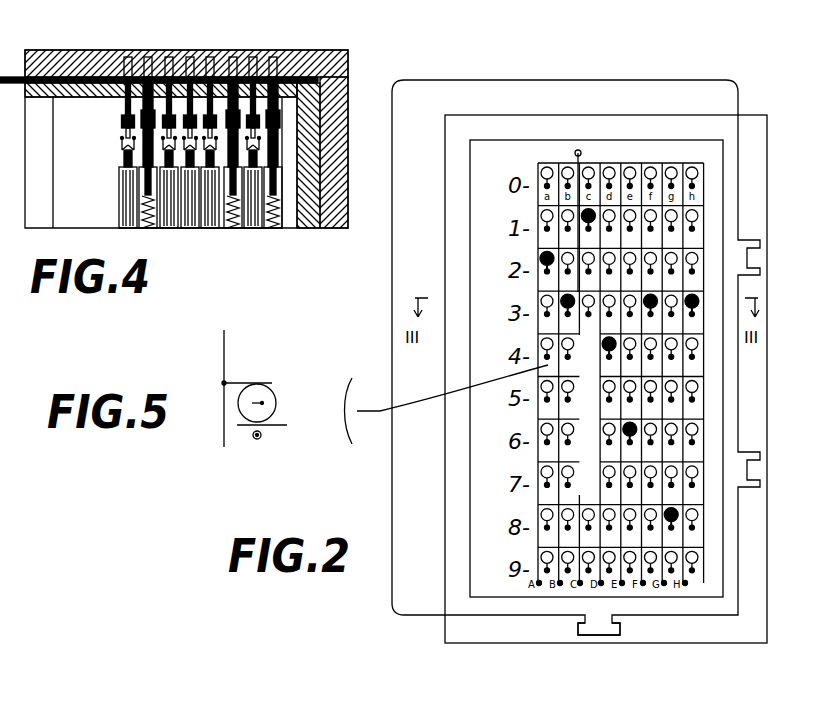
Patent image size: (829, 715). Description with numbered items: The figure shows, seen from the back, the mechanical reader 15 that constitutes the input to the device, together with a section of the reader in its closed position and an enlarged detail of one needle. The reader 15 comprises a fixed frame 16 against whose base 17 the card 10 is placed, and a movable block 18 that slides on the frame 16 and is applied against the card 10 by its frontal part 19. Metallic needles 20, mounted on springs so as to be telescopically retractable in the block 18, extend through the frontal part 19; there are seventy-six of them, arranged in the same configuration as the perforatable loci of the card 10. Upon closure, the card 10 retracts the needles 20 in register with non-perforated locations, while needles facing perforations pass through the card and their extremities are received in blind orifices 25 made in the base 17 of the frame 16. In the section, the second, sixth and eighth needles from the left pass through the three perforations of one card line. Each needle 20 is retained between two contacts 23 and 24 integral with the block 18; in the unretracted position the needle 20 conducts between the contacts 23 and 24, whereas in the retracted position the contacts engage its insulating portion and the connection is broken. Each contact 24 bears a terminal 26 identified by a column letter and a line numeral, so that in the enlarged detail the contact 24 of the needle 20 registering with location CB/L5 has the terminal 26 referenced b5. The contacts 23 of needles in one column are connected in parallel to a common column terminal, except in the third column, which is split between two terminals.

In FIG. 4, the card 10 is at (14, 73).
In FIG. 2, the card 10 is at (490, 83).
In FIG. 4, the reader 15 is at (358, 51).
In FIG. 2, the reader 15 is at (432, 471).
In FIG. 4, the fixed frame 16 is at (348, 186).
In FIG. 2, the fixed frame 16 is at (460, 625).
In FIG. 4, the base 17 is at (300, 49).
In FIG. 4, the movable block 18 is at (290, 229).
In FIG. 2, the movable block 18 is at (490, 520).
In FIG. 4, the frontal part 19 is at (90, 99).
In FIG. 5, the needle 20 is at (277, 398).
In FIG. 2, the needle 20 is at (546, 430).
In FIG. 5, the contact 23 is at (226, 382).
In FIG. 2, the contact 23 is at (545, 292).
In FIG. 4, the contact 24 is at (282, 163).
In FIG. 5, the contact 24 is at (270, 424).
In FIG. 2, the contact 24 is at (697, 522).
In FIG. 4, the blind orifice 25 is at (238, 57).
In FIG. 5, the terminal 26 is at (258, 440).
In FIG. 2, the terminal 26 is at (692, 355).
In FIG. 5, the terminal reference b5 is at (254, 440).